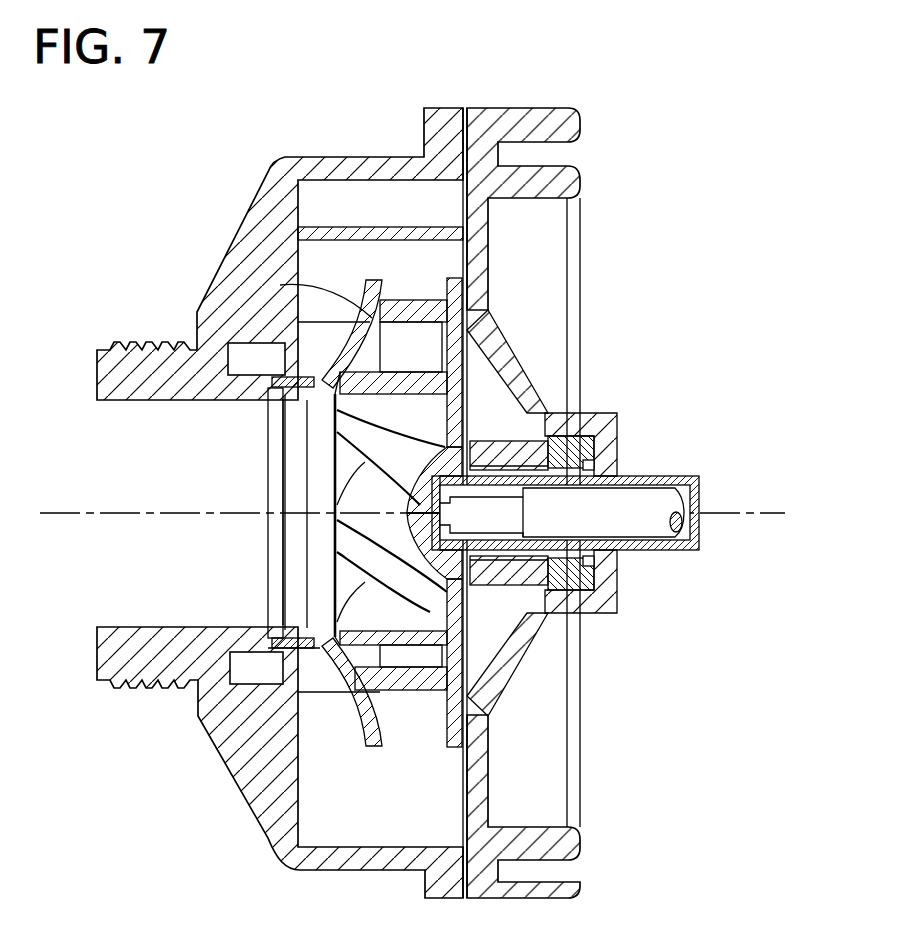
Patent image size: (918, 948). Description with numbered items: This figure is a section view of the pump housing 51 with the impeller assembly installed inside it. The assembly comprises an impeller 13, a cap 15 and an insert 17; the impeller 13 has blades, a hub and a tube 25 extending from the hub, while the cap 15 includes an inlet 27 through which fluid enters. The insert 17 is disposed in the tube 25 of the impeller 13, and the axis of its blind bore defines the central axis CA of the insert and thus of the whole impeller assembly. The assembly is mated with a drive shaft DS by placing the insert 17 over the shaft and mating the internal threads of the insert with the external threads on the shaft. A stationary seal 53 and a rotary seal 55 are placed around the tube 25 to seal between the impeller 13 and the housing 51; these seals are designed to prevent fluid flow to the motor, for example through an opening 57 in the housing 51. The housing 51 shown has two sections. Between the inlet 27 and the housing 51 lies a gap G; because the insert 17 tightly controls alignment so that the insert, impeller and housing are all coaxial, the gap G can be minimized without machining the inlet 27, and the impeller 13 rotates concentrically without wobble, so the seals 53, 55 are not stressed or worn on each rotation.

The impeller 13 is at (470, 292).
The cap 15 is at (370, 302).
The insert 17 is at (510, 548).
The tube 25 is at (672, 552).
The inlet 27 is at (296, 628).
The housing 51 is at (232, 773).
The stationary seal 53 is at (585, 415).
The rotary seal 55 is at (507, 443).
The opening 57 is at (620, 470).
The central axis CA is at (130, 513).
The gap G is at (285, 627).
The drive shaft DS is at (665, 488).